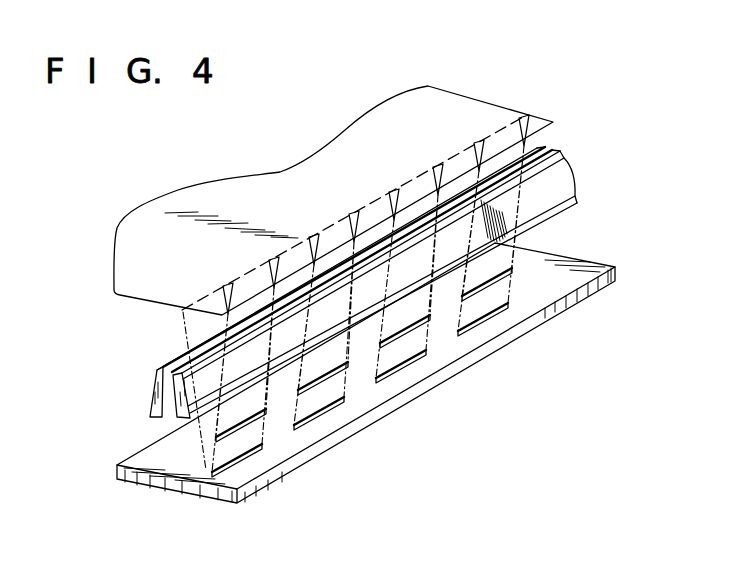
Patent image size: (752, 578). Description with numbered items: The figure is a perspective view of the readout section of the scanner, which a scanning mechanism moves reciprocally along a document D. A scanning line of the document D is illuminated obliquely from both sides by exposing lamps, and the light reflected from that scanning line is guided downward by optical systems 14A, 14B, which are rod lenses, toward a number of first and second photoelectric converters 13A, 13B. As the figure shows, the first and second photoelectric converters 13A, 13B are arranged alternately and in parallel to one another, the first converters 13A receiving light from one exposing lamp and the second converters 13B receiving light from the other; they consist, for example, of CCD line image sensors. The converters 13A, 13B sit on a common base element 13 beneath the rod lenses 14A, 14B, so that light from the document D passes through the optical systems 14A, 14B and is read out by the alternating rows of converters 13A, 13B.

The document D is at (473, 105).
The base plate 13 is at (604, 268).
The first photoelectric converters 13A is at (255, 457).
The second photoelectric converters 13B is at (264, 416).
The optical system (rod lens) 14A is at (567, 180).
The optical system (rod lens) 14B is at (153, 388).